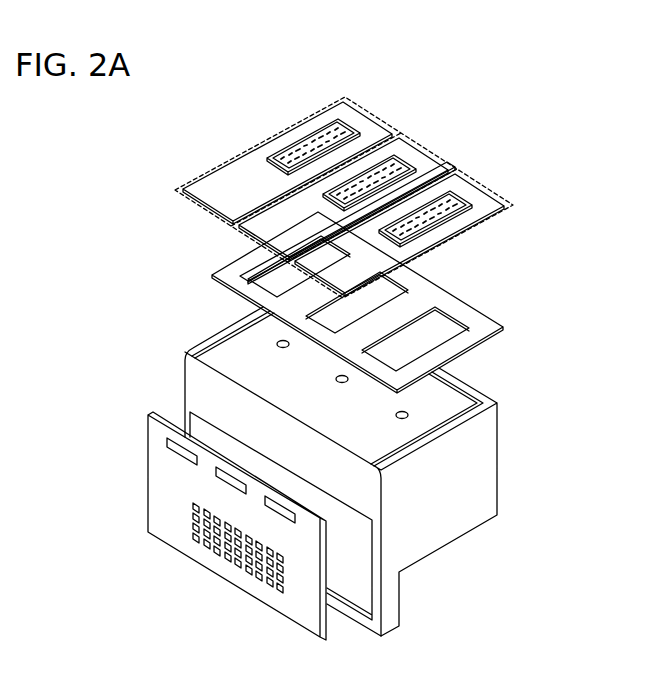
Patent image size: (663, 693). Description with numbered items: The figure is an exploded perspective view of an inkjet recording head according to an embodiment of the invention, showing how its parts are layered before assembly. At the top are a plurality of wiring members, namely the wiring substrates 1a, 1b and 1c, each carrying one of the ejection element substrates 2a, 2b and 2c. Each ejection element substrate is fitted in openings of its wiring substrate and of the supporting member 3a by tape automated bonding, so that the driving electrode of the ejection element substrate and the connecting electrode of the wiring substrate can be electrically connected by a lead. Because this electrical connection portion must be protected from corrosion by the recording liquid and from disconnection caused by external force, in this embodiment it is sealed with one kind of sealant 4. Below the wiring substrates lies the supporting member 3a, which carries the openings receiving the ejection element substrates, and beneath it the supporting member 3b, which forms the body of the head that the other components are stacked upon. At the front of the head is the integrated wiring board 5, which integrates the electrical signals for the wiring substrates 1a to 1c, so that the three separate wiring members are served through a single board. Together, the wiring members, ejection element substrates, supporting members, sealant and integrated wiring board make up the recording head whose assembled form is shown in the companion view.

The wiring member 1a is at (360, 120).
The wiring member 1b is at (412, 142).
The wiring member 1c is at (473, 187).
The ejection element substrate 2a is at (310, 128).
The ejection element substrate 2b is at (427, 168).
The ejection element substrate 2c is at (453, 210).
The supporting member 3a is at (483, 323).
The supporting member 3b is at (483, 457).
The sealant 4 is at (413, 260).
The integrated wiring board 5 is at (170, 532).